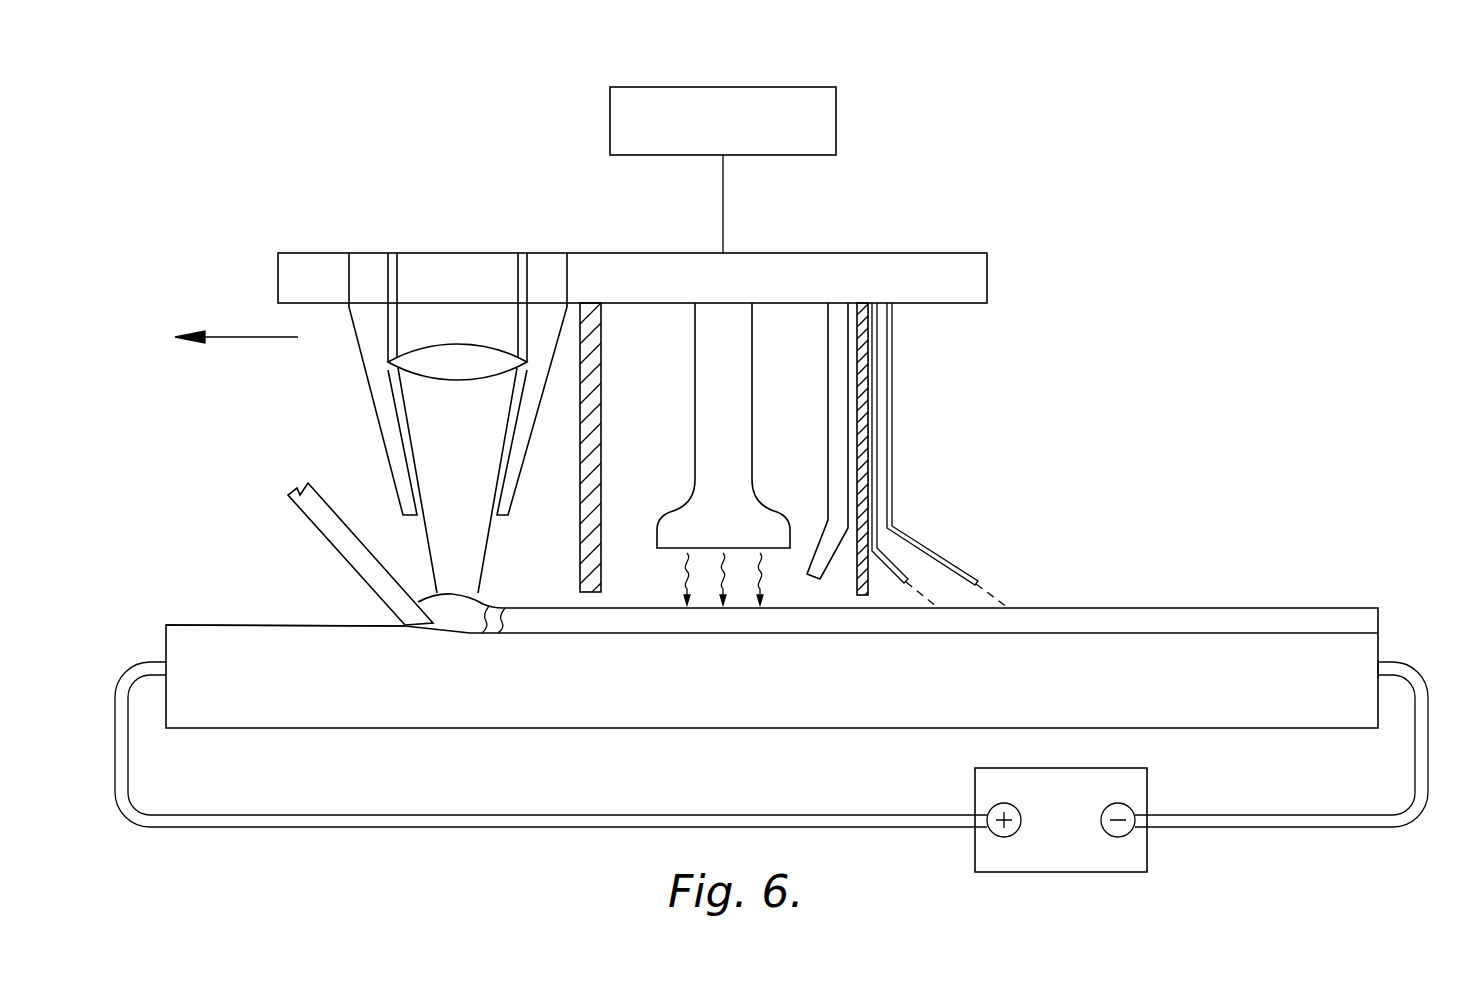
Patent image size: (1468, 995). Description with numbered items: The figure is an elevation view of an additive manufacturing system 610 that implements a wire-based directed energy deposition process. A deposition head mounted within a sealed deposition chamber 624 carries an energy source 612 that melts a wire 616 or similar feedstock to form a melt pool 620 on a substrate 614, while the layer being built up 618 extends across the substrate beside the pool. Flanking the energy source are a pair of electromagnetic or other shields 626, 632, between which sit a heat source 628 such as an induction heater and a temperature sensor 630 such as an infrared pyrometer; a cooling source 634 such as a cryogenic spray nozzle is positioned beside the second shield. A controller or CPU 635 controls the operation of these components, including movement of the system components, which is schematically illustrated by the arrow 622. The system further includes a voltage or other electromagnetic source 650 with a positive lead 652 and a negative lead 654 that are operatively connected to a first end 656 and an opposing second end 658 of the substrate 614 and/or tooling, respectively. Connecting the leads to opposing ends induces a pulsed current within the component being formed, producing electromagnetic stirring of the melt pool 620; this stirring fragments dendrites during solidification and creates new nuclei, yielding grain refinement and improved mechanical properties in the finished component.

The system 610 is at (272, 190).
The energy source 612 is at (477, 270).
The substrate 614 is at (545, 705).
The wire 616 is at (328, 530).
The second workpiece 618 is at (1163, 618).
The melt pool 620 is at (458, 608).
The arrow 622 is at (236, 338).
The sealed deposition chamber 624 is at (940, 140).
The shield 626 is at (590, 382).
The heat source 628 is at (733, 407).
The temperature sensor 630 is at (837, 323).
The shield 632 is at (860, 382).
The cooling source 634 is at (903, 550).
The controller or CPU 635 is at (828, 103).
The voltage or other electromagnetic source 650 is at (1065, 867).
The positive lead 652 is at (528, 822).
The negative lead 654 is at (1273, 820).
The first end 656 is at (170, 641).
The second end 658 is at (1373, 650).